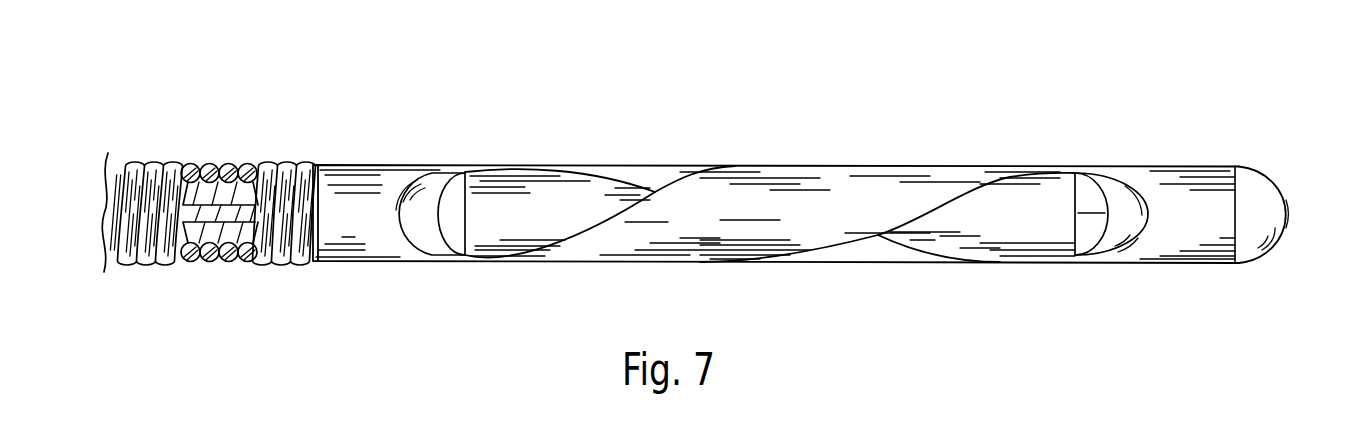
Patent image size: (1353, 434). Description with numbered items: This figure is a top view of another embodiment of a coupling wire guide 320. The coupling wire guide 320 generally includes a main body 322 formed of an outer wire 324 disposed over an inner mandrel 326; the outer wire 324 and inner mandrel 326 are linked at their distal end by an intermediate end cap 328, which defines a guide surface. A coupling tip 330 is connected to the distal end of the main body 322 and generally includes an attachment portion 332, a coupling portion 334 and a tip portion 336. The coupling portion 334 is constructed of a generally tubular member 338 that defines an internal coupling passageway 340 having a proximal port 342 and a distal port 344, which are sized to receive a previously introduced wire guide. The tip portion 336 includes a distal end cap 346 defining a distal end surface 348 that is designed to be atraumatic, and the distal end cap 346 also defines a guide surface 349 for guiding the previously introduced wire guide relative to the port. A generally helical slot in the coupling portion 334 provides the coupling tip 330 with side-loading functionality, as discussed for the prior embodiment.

The coupling wire guide 320 is at (243, 41).
The main body 322 is at (290, 164).
The outer wire 324 is at (183, 165).
The inner mandrel 326 is at (235, 164).
The intermediate end cap 328 is at (447, 220).
The coupling tip 330 is at (618, 110).
The attachment portion 332 is at (397, 165).
The coupling portion 334 is at (832, 166).
The tip portion 336 is at (1170, 166).
The tubular member 338 is at (730, 223).
The internal coupling passageway 340 is at (902, 220).
The proximal port 342 is at (500, 172).
The distal port 344 is at (1048, 173).
The distal end cap 346 is at (1260, 195).
The distal end surface 348 is at (1292, 212).
The guide surface 349 is at (1088, 222).